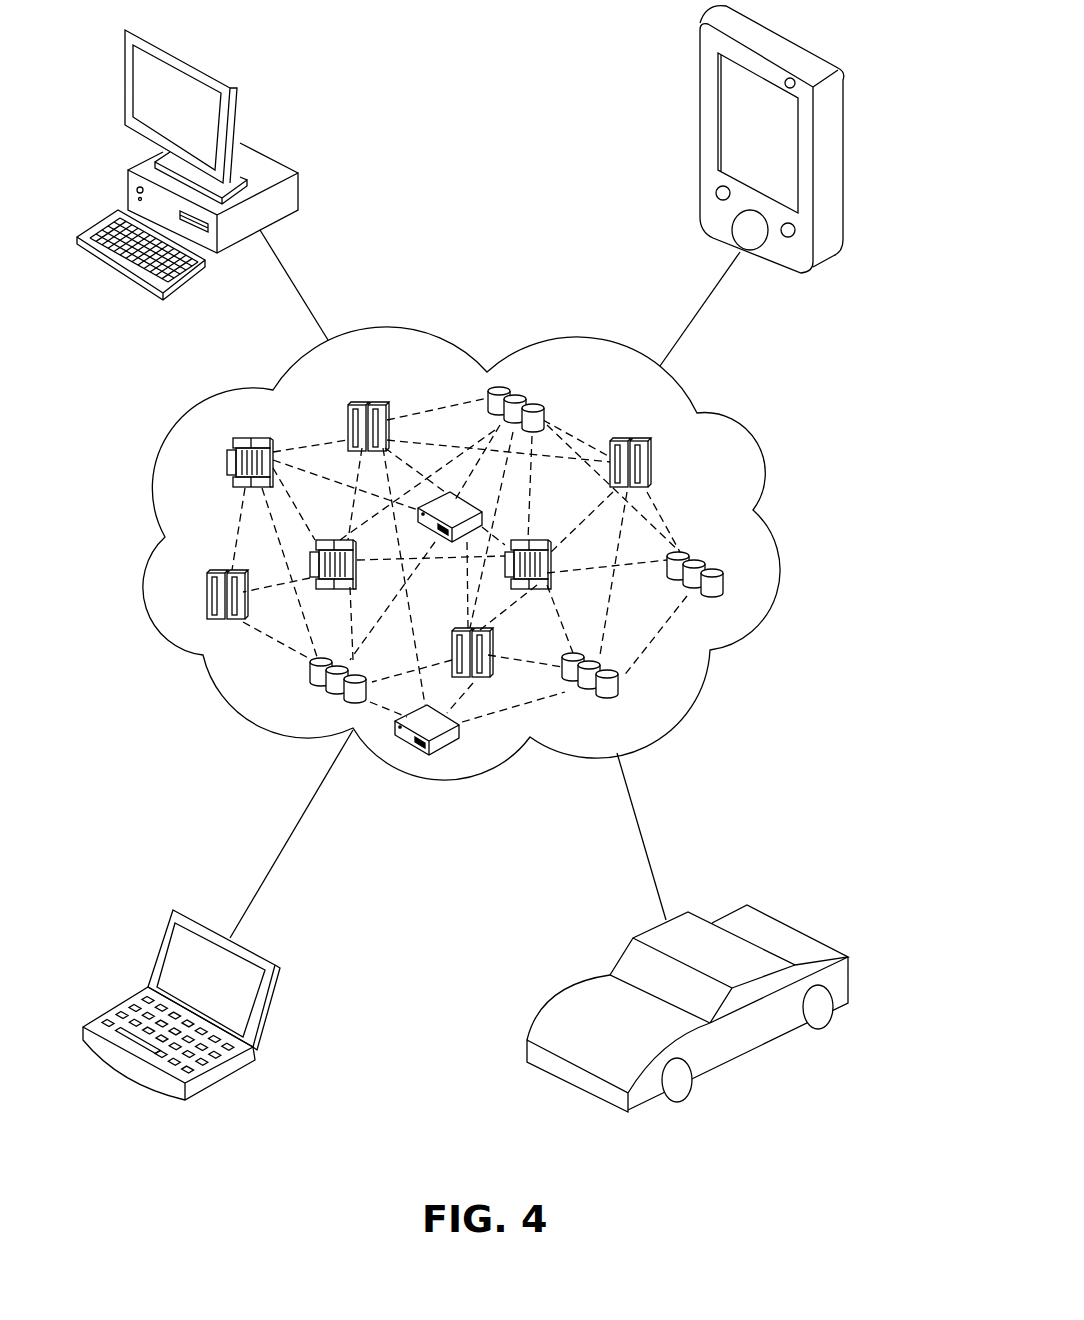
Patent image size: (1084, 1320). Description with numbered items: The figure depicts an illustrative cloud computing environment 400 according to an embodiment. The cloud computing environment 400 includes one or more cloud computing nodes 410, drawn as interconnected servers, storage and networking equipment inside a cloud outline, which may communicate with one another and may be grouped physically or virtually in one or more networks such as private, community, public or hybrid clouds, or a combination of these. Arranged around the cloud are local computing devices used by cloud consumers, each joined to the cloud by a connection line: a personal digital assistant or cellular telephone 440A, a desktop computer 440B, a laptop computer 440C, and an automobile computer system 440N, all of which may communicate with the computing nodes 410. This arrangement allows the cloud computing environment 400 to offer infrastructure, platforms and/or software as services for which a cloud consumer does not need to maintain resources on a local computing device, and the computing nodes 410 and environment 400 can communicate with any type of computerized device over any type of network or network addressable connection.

The cloud computing environment 400 is at (520, 553).
The cloud computing nodes 410 is at (697, 490).
The personal digital assistant (PDA) or cellular telephone 440A is at (700, 85).
The desktop computer 440B is at (298, 187).
The laptop computer 440C is at (280, 978).
The automobile computer system 440N is at (848, 977).